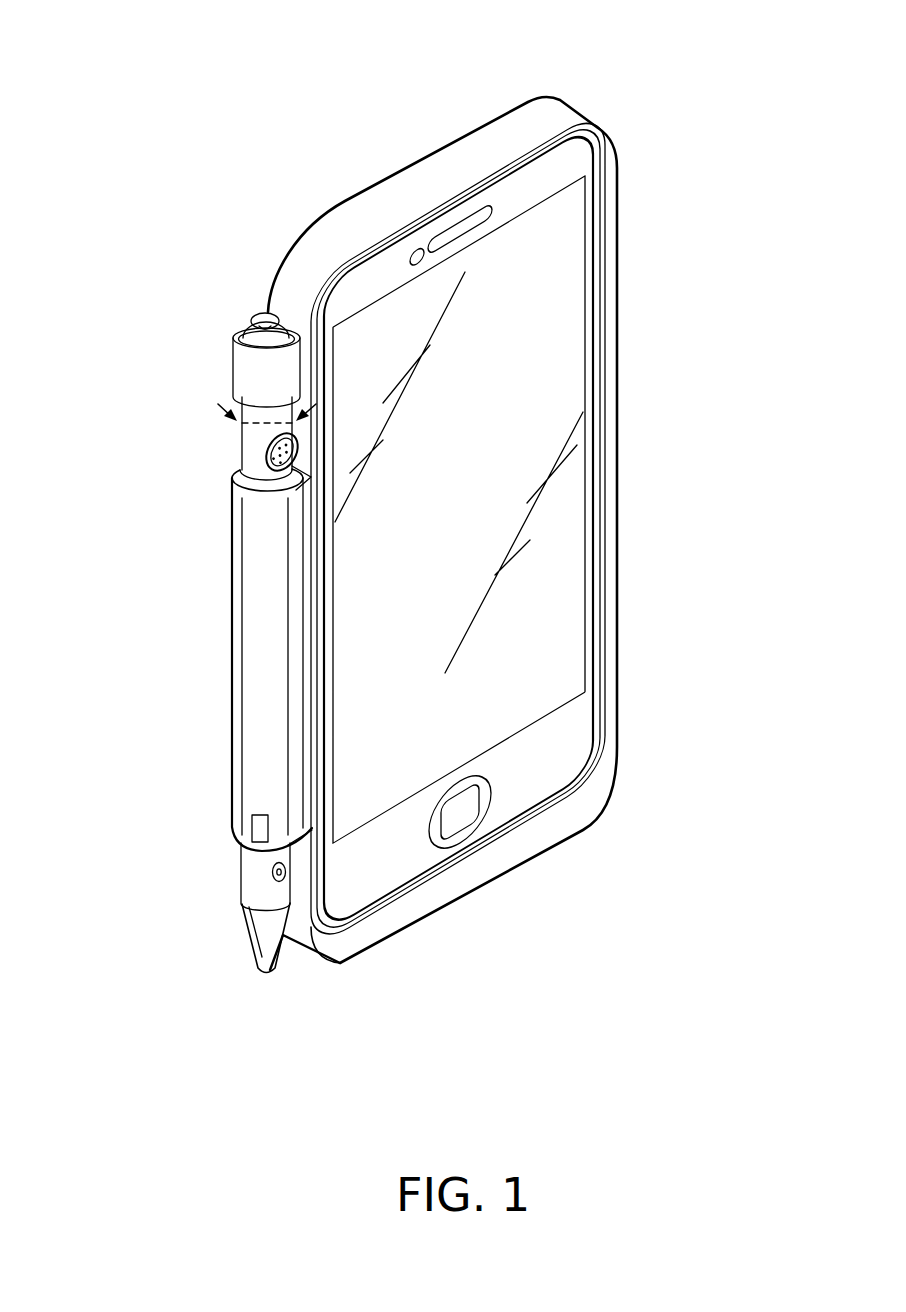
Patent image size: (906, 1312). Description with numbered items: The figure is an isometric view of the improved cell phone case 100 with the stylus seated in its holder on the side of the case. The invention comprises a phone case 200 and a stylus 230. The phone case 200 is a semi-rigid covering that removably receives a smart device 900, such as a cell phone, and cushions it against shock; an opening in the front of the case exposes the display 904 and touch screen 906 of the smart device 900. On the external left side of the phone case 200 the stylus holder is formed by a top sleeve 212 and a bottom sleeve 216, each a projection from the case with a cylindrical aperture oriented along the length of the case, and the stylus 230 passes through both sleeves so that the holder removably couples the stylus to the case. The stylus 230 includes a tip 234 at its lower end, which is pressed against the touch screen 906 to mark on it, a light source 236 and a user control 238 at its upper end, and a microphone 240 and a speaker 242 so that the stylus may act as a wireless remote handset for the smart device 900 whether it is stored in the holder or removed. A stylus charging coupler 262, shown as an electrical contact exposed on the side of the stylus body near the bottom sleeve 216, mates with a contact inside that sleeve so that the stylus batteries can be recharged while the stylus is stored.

The improved cell phone case 100 is at (138, 80).
The phone case 200 is at (462, 145).
The top sleeve 212 is at (252, 378).
The bottom sleeve 216 is at (257, 612).
The stylus 230 is at (243, 860).
The tip 234 is at (263, 943).
The light source 236 is at (248, 323).
The user control 238 is at (260, 313).
The microphone 240 is at (273, 873).
The speaker 242 is at (268, 453).
The stylus charging coupler 262 is at (253, 818).
The smart device 900 is at (562, 740).
The display 904 is at (522, 578).
The touch screen 906 is at (550, 507).